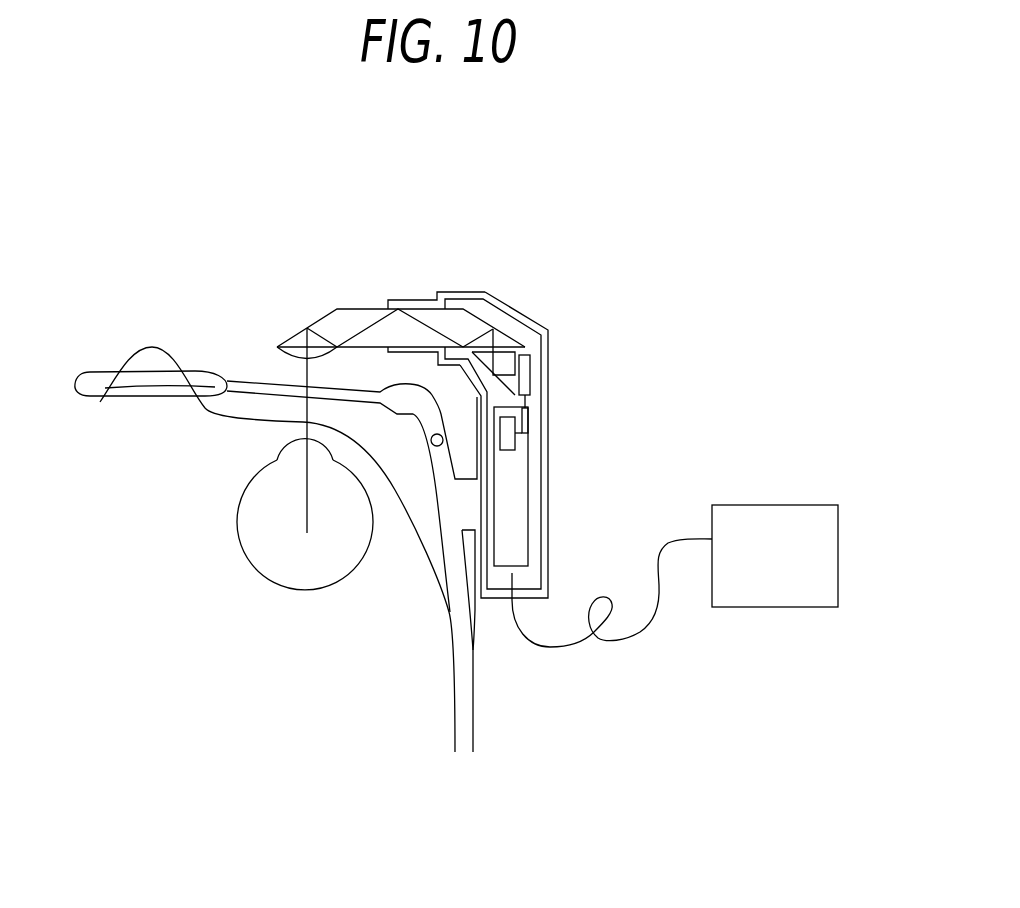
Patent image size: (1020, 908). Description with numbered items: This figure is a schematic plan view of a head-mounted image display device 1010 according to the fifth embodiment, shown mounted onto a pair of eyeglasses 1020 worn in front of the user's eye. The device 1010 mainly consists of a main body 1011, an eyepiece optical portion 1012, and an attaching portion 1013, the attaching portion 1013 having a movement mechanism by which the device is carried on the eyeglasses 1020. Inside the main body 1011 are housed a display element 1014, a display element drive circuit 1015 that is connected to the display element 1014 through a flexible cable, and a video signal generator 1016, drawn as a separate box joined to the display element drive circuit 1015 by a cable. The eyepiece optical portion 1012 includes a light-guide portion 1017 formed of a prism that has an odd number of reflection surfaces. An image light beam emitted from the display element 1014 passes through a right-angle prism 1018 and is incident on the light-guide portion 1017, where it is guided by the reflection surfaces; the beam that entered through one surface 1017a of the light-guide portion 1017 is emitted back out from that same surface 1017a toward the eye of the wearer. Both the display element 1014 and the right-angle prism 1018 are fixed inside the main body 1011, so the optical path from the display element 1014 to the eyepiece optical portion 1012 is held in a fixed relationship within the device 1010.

The head-mounted image display device 1010 is at (682, 158).
The main body 1011 is at (517, 306).
The eyepiece optical portion 1012 is at (265, 282).
The attaching portion 1013 is at (414, 300).
The display element 1014 is at (526, 362).
The display element drive circuit 1015 is at (515, 490).
The video signal generator 1016 is at (812, 600).
The light-guide portion 1017 is at (358, 316).
The one surface 1017a is at (348, 347).
The right-angle prism 1018 is at (511, 366).
The eyeglasses 1020 is at (385, 742).